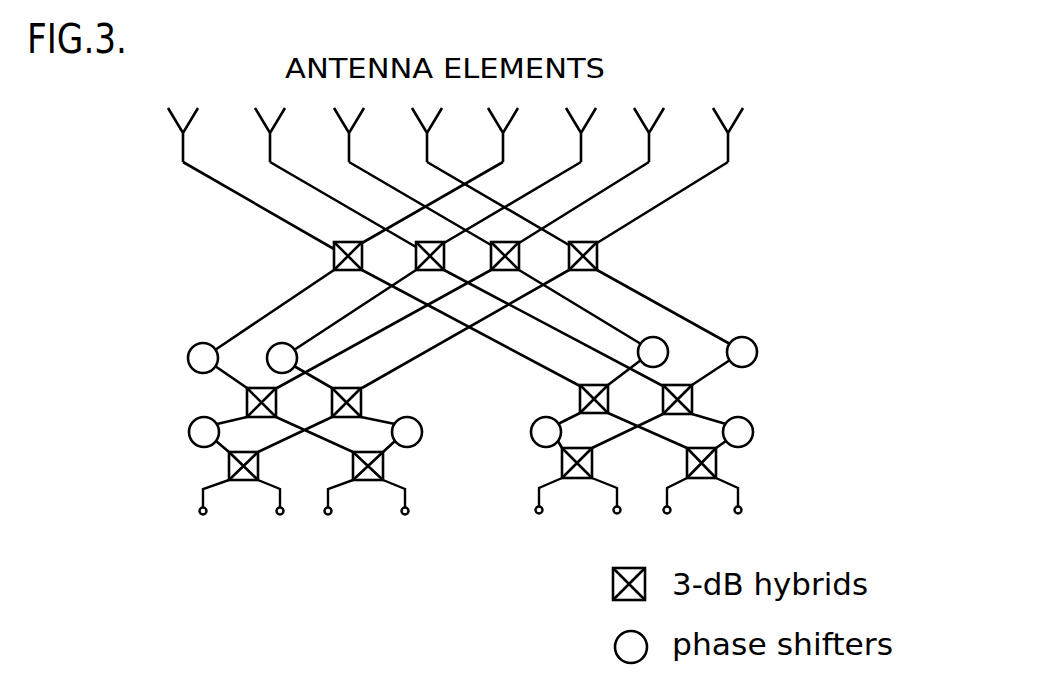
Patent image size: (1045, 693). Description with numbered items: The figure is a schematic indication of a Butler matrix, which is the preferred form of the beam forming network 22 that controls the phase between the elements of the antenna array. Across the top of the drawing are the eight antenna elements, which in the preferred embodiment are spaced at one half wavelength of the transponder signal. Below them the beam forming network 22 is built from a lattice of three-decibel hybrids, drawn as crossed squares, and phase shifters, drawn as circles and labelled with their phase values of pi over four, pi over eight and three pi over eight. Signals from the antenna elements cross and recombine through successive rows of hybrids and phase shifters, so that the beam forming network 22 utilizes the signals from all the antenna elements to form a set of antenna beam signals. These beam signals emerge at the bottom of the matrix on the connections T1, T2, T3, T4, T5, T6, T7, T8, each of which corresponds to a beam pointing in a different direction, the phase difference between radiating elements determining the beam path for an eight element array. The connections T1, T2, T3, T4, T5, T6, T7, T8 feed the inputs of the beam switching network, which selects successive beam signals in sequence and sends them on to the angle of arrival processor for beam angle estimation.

The beam forming network 22 is at (723, 255).
The connection T1 is at (209, 517).
The connection T2 is at (278, 517).
The connection T3 is at (332, 517).
The connection T4 is at (403, 517).
The connection T5 is at (543, 516).
The connection T6 is at (613, 516).
The connection T7 is at (668, 516).
The connection T8 is at (737, 516).